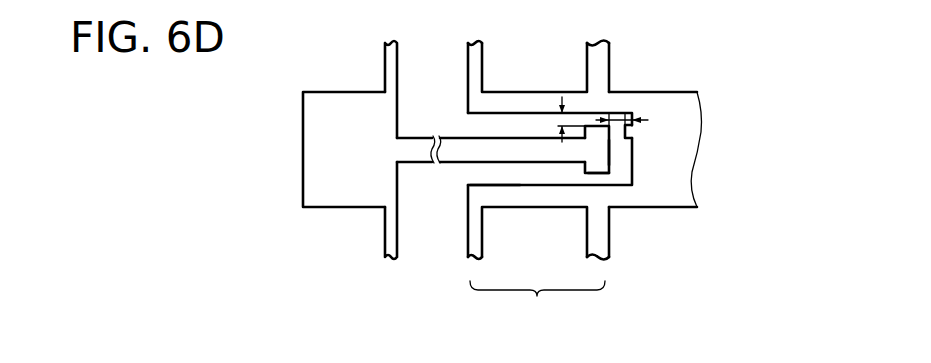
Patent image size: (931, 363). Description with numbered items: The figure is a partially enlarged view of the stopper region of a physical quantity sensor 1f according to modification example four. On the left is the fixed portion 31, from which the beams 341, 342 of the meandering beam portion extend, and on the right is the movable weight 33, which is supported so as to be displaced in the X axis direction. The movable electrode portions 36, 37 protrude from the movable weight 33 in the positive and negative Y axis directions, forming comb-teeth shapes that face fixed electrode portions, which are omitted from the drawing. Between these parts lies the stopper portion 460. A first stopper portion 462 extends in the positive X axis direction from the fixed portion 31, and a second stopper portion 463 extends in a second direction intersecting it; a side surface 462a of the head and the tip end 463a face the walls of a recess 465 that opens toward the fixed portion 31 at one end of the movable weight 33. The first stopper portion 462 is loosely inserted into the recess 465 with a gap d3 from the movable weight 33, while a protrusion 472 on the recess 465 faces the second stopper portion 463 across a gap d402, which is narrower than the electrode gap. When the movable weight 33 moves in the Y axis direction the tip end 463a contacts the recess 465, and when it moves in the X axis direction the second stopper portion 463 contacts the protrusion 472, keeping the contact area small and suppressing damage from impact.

The physical quantity sensor 1f is at (705, 62).
The fixed portion 31 is at (305, 146).
The movable weight 33 is at (690, 103).
The movable electrode portion 36 is at (587, 68).
The movable electrode portion 37 is at (609, 232).
The beam 341 is at (468, 70).
The beam 342 is at (468, 232).
The stopper portion 460 is at (537, 300).
The first stopper portion 462 is at (532, 152).
The side surface of head 462a is at (611, 153).
The second stopper portion 463 is at (584, 171).
The tip end of second stopper portion 463a is at (597, 174).
The recess 465 is at (492, 187).
The protrusion 472 is at (637, 127).
The gap d3 is at (560, 122).
The gap d402 is at (612, 117).